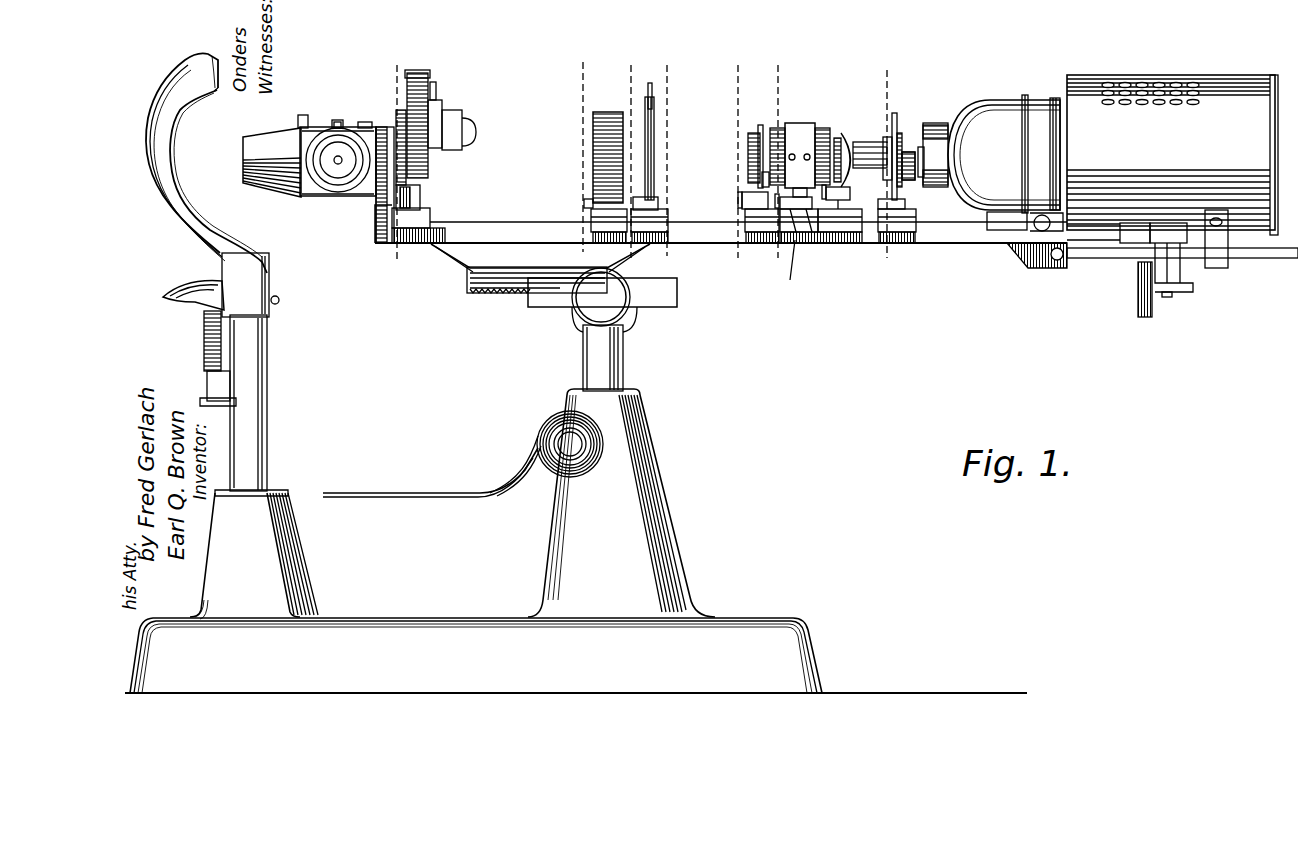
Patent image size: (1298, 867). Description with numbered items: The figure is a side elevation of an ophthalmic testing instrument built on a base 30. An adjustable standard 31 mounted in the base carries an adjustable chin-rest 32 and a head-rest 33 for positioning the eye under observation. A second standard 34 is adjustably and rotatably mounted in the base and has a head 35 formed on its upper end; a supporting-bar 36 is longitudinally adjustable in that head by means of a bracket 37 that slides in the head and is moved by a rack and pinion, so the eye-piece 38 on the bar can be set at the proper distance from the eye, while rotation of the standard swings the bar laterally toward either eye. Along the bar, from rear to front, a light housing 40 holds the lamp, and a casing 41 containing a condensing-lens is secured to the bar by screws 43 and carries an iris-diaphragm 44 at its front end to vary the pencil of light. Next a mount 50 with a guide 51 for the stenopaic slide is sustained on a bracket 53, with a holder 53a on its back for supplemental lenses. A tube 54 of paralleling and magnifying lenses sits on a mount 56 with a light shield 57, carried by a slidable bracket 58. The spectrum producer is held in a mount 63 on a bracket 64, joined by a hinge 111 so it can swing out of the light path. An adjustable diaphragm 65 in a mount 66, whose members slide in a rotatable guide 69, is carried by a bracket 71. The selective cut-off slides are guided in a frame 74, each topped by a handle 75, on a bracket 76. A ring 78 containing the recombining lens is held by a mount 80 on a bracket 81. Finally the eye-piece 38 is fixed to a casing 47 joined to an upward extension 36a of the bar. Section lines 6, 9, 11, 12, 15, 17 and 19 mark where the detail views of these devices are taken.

The section line 6— 6 is at (429, 162).
The section line 9— 9 is at (581, 154).
The section line 11 is at (620, 62).
The section line 12 is at (665, 158).
The section line 15 is at (736, 159).
The section line 17 is at (777, 159).
The section line 19 is at (883, 162).
The base 30 is at (576, 541).
The adjustable standard 31 is at (268, 432).
The adjustable chin-rest 32 is at (180, 290).
The head-rest 33 is at (212, 92).
The standard 34 is at (625, 371).
The head 35 is at (550, 308).
The supporting-bar 36 is at (764, 246).
The upward extension 36a is at (378, 216).
The bracket 37 is at (463, 270).
The eye-piece 38 is at (272, 162).
The light housing 40 is at (1182, 196).
The casing 41 is at (1004, 162).
The screws 43 is at (1020, 250).
The iris-diaphragm 44 is at (938, 128).
The casing 47 is at (310, 196).
The mount 50 is at (901, 132).
The guide 51 is at (895, 125).
The bracket 53 is at (900, 226).
The holder 53a is at (910, 180).
The tube 54 is at (860, 143).
The mount 56 is at (838, 136).
The light shield 57 is at (850, 130).
The bracket 58 is at (850, 200).
The mount 63 is at (800, 166).
The bracket 64 is at (806, 238).
The adjustable diaphragm 65 is at (762, 176).
The mount 66 is at (760, 126).
The guide 69 is at (750, 134).
The bracket 71 is at (748, 206).
The frame 74 is at (656, 125).
The handle 75 is at (654, 96).
The bracket 76 is at (658, 197).
The ring 78 is at (595, 141).
The mount 80 is at (586, 201).
The bracket 81 is at (600, 220).
The hinge 111 is at (826, 300).